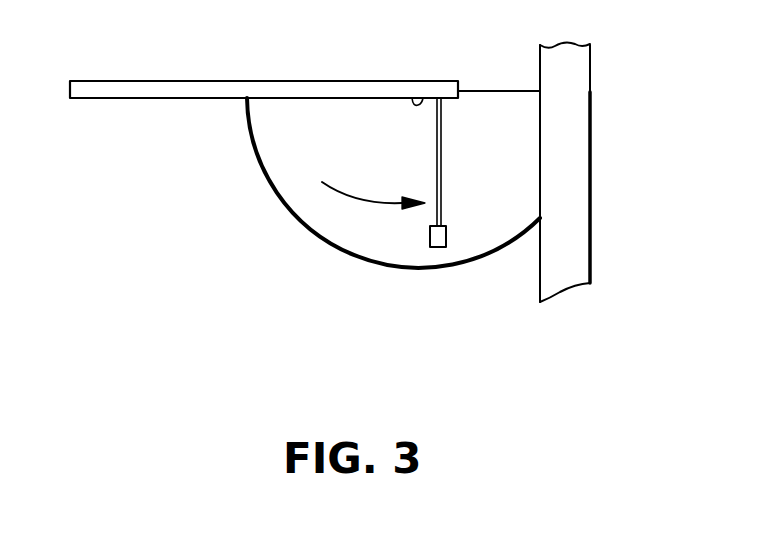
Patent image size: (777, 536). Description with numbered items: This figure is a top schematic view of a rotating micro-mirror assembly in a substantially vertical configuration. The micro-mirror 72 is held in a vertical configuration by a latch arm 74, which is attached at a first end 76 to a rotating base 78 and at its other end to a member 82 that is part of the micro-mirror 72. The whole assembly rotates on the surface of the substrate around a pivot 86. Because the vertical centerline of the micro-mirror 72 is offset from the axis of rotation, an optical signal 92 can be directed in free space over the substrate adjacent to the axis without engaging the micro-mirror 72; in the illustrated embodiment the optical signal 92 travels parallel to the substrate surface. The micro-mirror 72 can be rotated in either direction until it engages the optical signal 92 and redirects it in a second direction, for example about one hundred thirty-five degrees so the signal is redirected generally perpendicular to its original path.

The micro-mirror 72 is at (118, 98).
The latch arm 74 is at (436, 212).
The first end 76 is at (431, 240).
The rotating base 78 is at (266, 175).
The member 82 is at (450, 90).
The pivot 86 is at (413, 105).
The optical signal 92 is at (573, 173).